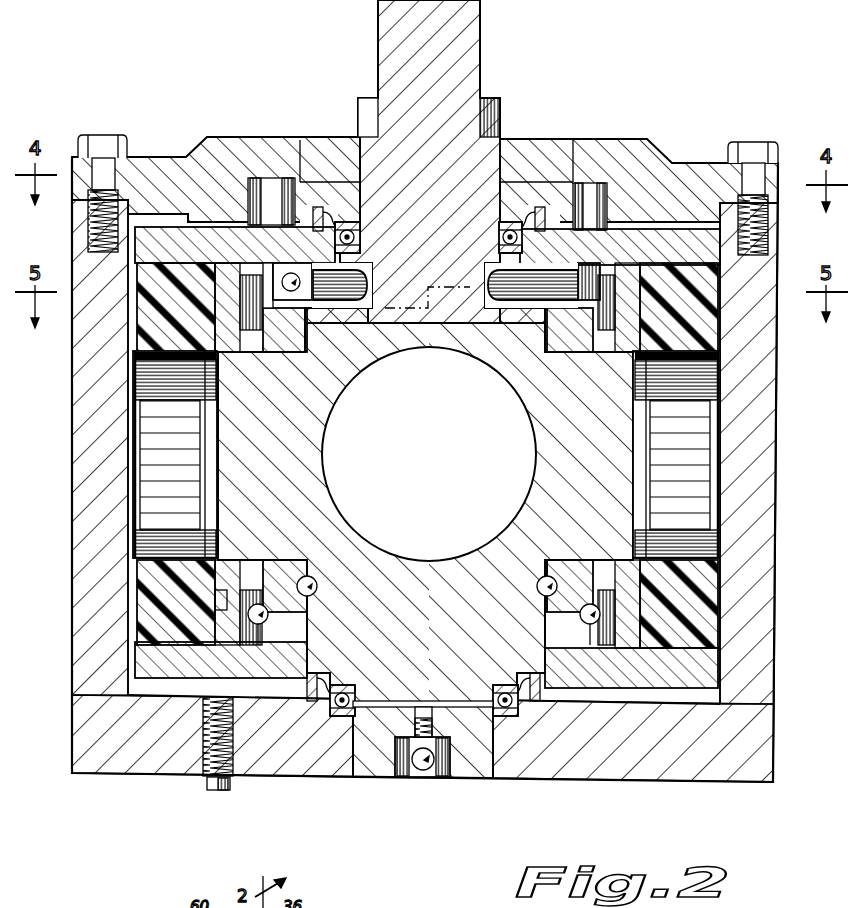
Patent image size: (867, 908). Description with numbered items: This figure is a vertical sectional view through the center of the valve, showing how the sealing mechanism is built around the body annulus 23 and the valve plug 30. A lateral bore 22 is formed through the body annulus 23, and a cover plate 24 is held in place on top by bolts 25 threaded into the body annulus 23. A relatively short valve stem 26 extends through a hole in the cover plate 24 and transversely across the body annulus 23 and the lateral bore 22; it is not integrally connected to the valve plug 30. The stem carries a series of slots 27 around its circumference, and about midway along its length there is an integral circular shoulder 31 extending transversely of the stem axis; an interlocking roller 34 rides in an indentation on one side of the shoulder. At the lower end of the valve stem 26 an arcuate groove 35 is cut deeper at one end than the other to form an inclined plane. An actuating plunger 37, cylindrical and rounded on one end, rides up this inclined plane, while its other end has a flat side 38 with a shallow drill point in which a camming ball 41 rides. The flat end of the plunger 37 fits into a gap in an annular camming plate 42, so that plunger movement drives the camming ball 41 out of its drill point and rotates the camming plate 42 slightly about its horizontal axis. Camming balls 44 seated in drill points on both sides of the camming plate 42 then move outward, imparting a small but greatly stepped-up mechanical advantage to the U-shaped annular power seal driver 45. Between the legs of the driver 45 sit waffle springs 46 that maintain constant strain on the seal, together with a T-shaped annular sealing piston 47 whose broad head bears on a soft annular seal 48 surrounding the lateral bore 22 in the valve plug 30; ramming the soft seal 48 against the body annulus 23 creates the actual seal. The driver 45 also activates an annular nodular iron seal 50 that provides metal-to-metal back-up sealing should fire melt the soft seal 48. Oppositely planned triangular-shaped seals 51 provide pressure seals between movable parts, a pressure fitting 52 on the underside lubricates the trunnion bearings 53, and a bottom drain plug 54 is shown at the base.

The lateral bore 22 is at (417, 431).
The body annulus 23 is at (78, 465).
The cover plate 24 is at (598, 140).
The bolts 25 is at (117, 130).
The valve stem 26 is at (488, 66).
The slots 27 is at (500, 120).
The valve plug 30 is at (561, 431).
The circular shoulder 31 is at (330, 163).
The interlocking roller 34 is at (268, 178).
The arcuate groove 35 is at (380, 272).
The actuating plunger 37 is at (325, 300).
The flat side 38 is at (292, 270).
The camming ball 41 is at (268, 263).
The annular camming plate 42 is at (290, 352).
The camming balls 44 is at (320, 586).
The annular power seal driver 45 is at (240, 352).
The waffle springs 46 is at (245, 275).
The T-shaped annular sealing piston 47 is at (215, 600).
The soft annular seal 48 is at (164, 318).
The annular nodular iron seal 50 is at (172, 268).
The triangular-shaped seals 51 is at (340, 218).
The pressure fitting 52 is at (416, 778).
The trunnion bearings 53 is at (330, 712).
The bottom drain plug 54 is at (232, 785).